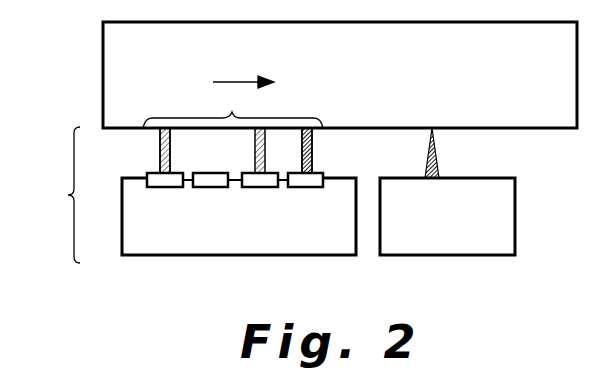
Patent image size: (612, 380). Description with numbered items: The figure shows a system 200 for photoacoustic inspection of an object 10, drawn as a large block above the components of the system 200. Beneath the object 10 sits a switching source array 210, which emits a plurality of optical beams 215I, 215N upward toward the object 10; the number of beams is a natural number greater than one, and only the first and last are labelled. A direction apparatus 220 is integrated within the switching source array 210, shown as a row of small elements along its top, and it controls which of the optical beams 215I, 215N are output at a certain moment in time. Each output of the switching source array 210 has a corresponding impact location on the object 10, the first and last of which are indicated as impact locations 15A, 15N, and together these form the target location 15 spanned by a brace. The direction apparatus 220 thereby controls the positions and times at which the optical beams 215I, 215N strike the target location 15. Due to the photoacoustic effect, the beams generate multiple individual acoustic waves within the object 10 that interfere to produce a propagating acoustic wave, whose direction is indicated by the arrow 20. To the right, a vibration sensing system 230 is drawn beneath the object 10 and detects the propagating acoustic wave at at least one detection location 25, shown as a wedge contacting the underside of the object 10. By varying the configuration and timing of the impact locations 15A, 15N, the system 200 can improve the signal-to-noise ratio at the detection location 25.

The object 10 is at (456, 62).
The target location 15 is at (233, 109).
The impact location 15A is at (164, 128).
The impact location 15N is at (309, 128).
The arrow 20 is at (238, 80).
The detection location 25 is at (433, 128).
The system 200 is at (49, 195).
The switching source array 210 is at (261, 230).
The optical beam 215I is at (160, 152).
The optical beam 215N is at (312, 150).
The direction apparatus 220 is at (310, 187).
The vibration sensing system 230 is at (470, 230).